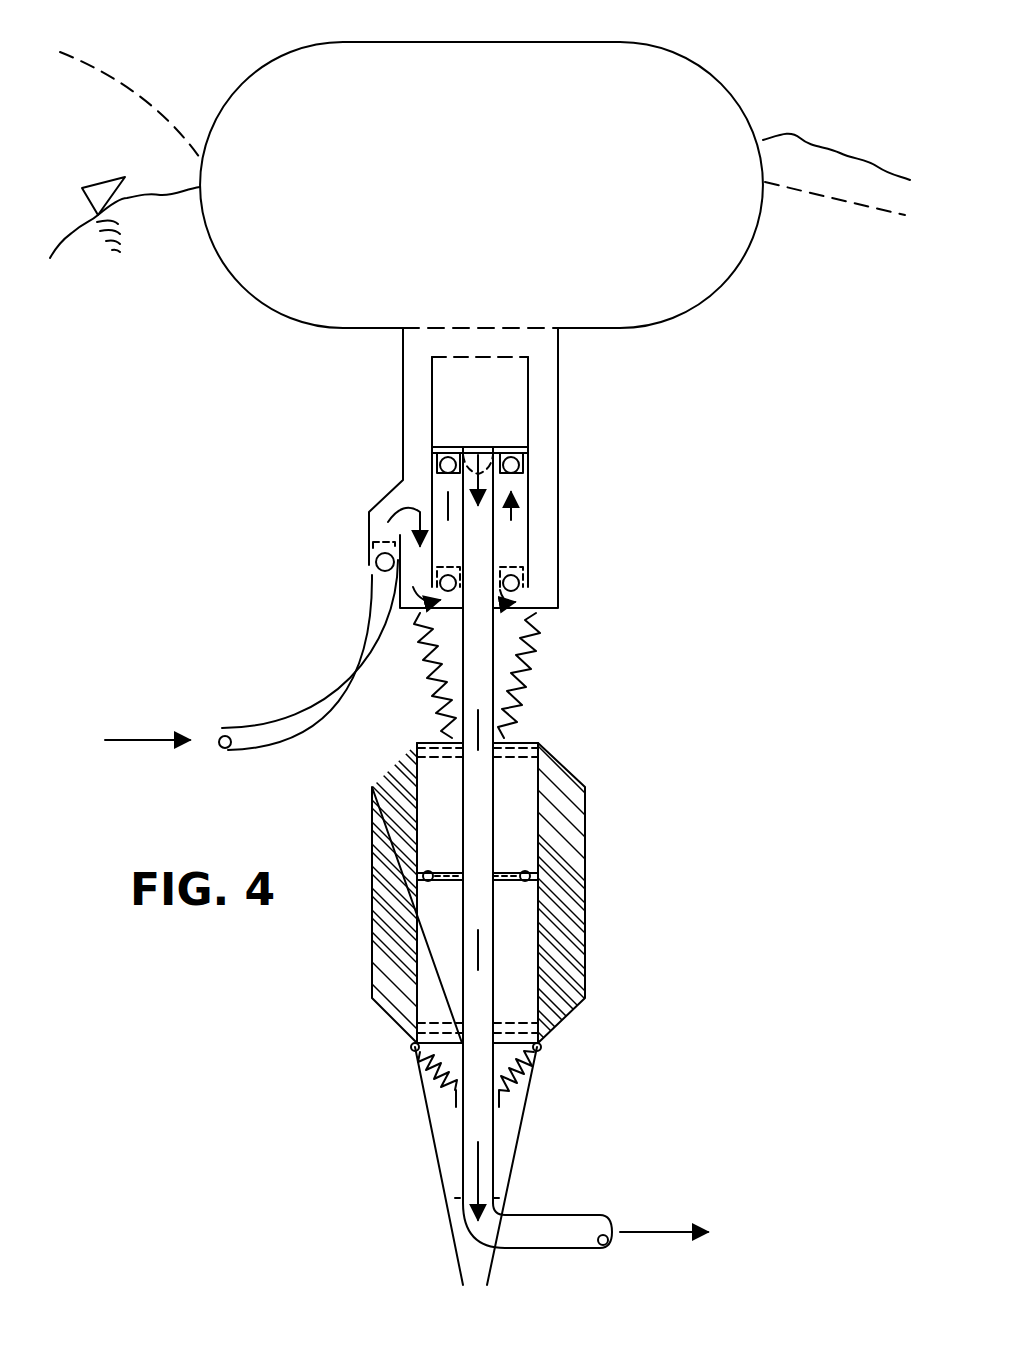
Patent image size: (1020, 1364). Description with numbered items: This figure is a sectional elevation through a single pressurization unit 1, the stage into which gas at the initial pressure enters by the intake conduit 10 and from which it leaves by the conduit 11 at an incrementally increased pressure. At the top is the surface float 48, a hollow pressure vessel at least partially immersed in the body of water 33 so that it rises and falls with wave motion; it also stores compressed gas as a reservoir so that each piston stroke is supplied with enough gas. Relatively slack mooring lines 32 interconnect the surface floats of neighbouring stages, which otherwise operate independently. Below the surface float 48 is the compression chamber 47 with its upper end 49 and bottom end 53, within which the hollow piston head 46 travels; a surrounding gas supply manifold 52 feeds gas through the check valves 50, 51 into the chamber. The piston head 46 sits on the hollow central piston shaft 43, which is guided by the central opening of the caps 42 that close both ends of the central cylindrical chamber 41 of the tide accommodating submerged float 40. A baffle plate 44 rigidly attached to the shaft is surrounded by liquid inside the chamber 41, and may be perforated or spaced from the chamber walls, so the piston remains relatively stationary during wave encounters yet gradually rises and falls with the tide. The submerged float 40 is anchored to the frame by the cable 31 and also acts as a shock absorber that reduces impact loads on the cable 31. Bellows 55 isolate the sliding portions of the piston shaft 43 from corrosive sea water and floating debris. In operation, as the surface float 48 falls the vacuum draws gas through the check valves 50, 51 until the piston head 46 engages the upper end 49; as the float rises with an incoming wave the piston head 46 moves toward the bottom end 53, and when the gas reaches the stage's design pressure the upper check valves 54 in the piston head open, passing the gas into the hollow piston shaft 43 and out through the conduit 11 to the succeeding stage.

The pressurization unit 1 is at (538, 42).
The intake conduit 10 is at (248, 724).
The conduit 11 is at (548, 1215).
The cable 31 is at (432, 1125).
The mooring lines 32 is at (133, 96).
The body of water 33 is at (785, 136).
The submerged float 40 is at (469, 959).
The central cylindrical chamber 41 is at (530, 790).
The caps 42 is at (530, 748).
The central piston shaft 43 is at (500, 952).
The baffle plate 44 is at (430, 870).
The piston head 46 is at (462, 447).
The compression chamber 47 is at (530, 505).
The surface float 48 is at (745, 268).
The upper end 49 is at (505, 365).
The check valve 50 is at (376, 566).
The check valve 51 is at (515, 590).
The gas supply manifold 52 is at (400, 490).
The bottom end 53 is at (520, 572).
The upper check valves 54 is at (526, 458).
The bellows 55 is at (528, 690).